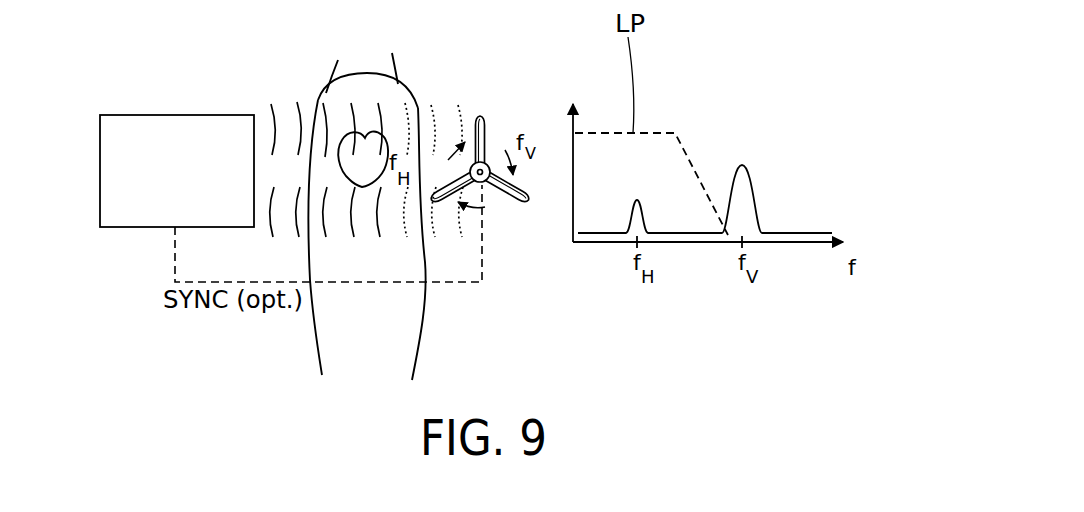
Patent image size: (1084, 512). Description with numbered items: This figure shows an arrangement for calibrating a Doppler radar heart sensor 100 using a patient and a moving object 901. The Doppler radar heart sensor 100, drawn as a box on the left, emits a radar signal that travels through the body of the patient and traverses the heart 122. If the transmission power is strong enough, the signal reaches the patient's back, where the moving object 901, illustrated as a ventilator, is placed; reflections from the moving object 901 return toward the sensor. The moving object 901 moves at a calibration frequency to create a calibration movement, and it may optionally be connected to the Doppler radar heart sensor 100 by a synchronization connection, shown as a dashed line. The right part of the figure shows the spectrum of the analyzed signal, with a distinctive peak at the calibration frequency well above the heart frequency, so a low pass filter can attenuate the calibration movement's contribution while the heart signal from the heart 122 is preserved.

The Doppler radar heart sensor 100 is at (202, 181).
The heart 122 is at (370, 152).
The moving object 901 is at (478, 110).